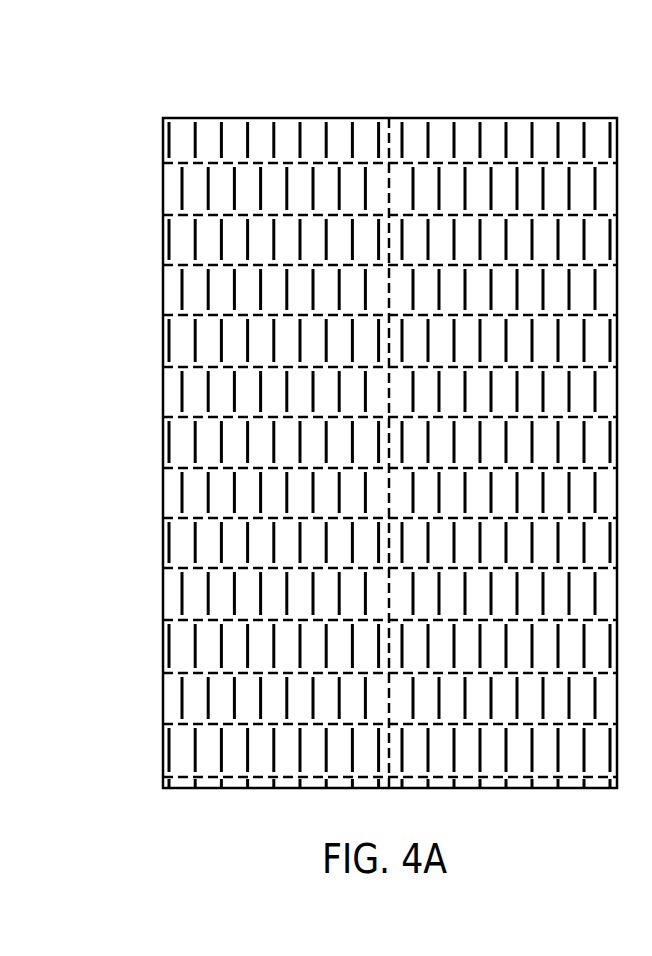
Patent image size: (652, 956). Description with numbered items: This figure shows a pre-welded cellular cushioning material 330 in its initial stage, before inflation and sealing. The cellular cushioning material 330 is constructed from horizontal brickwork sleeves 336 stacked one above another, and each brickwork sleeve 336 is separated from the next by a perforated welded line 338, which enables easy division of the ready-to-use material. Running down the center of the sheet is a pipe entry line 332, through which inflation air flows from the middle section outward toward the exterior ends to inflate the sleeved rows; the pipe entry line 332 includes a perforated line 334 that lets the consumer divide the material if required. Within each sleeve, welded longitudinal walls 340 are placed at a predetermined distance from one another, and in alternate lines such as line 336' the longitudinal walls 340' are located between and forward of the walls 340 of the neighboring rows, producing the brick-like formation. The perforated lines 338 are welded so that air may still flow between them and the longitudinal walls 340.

The cellular cushioning material 330 is at (206, 70).
The pipe entry line 332 is at (388, 118).
The perforated line 334 is at (392, 142).
The brickwork sleeve 336 is at (324, 293).
The alternate line 336' is at (124, 340).
The perforated welded line 338 is at (162, 265).
The welded longitudinal wall 340 is at (117, 387).
The longitudinal wall 340' is at (111, 321).